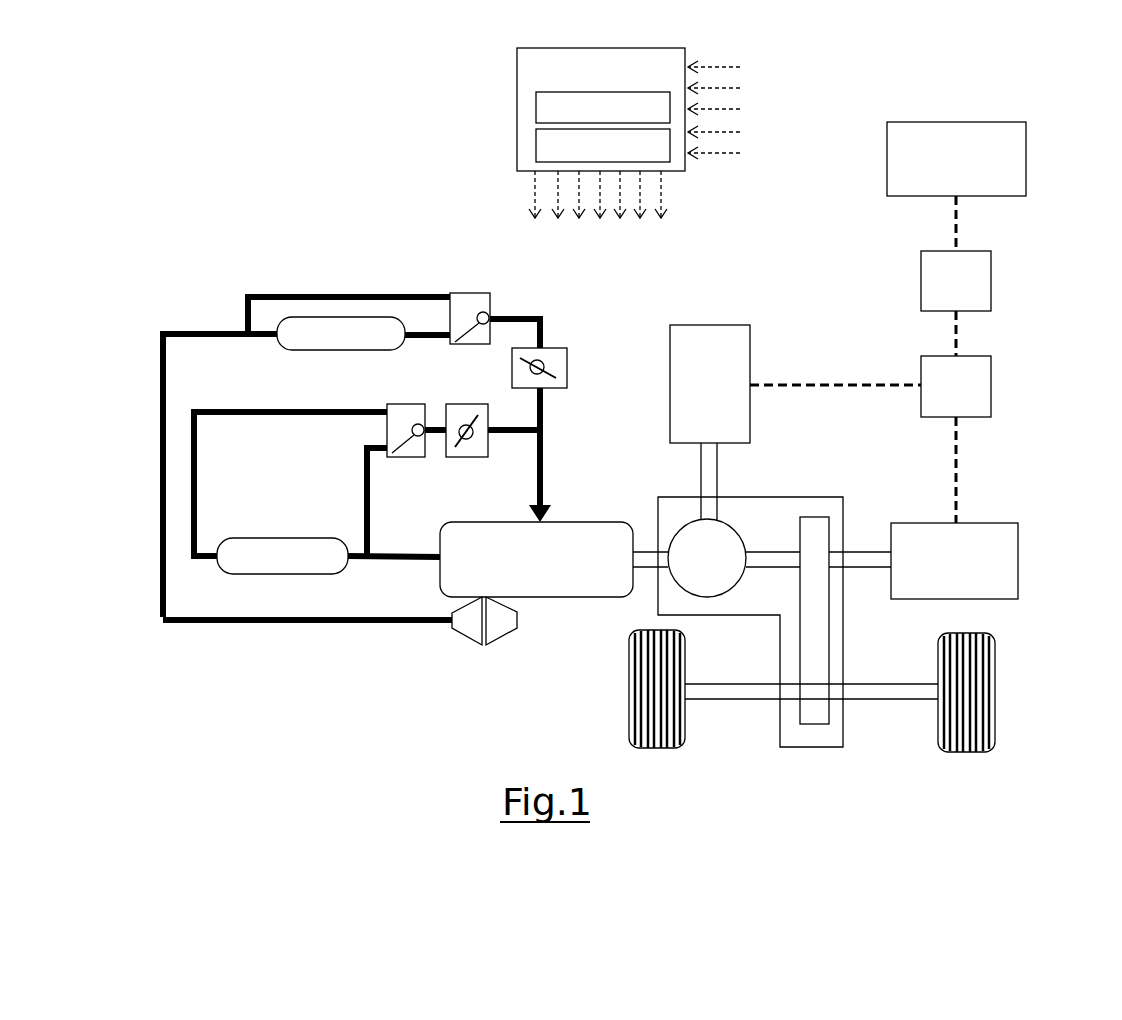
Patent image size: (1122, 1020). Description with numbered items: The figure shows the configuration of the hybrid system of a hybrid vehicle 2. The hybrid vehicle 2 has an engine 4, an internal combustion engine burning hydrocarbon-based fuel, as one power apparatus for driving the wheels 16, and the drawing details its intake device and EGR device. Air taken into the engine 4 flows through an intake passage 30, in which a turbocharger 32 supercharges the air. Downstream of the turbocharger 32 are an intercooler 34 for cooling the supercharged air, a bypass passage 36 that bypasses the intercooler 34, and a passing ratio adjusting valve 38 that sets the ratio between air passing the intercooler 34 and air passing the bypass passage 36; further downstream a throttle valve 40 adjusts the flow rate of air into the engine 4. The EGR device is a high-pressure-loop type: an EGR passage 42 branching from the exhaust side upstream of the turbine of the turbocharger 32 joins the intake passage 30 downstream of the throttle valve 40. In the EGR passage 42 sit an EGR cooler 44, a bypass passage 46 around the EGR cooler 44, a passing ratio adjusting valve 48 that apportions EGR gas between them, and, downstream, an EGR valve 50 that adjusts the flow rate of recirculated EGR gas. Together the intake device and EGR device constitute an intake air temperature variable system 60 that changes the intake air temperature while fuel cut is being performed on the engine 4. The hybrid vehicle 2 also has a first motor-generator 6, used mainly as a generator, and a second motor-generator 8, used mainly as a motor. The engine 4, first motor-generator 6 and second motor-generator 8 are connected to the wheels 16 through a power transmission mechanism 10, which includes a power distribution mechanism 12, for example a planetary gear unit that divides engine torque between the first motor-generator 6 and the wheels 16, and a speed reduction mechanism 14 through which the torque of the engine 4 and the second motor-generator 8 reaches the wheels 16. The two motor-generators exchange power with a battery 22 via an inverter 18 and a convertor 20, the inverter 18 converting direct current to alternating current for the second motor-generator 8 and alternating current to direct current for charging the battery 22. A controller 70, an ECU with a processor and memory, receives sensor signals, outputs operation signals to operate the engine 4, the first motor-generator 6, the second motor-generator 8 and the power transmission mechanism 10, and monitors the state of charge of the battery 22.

The hybrid vehicle 2 is at (303, 121).
The engine 4 is at (568, 522).
The first motor-generator 6 is at (718, 325).
The second motor-generator 8 is at (987, 523).
The power transmission mechanism 10 is at (833, 497).
The power distribution mechanism 12 is at (735, 530).
The speed reduction mechanism 14 is at (808, 517).
The wheels 16 is at (630, 680).
The inverter 18 is at (977, 356).
The convertor 20 is at (975, 251).
The battery 22 is at (972, 122).
The intake passage 30 is at (159, 443).
The turbocharger 32 is at (468, 640).
The intercooler 34 is at (305, 352).
The bypass passage 36 is at (350, 295).
The passing ratio adjusting valve 38 is at (470, 293).
The throttle valve 40 is at (550, 348).
The EGR passage 42 is at (233, 410).
The EGR cooler 44 is at (277, 538).
The bypass passage 46 is at (362, 502).
The passing ratio adjusting valve 48 is at (388, 404).
The EGR valve 50 is at (467, 404).
The intake air temperature variable system 60 is at (203, 295).
The controller 70 is at (587, 48).